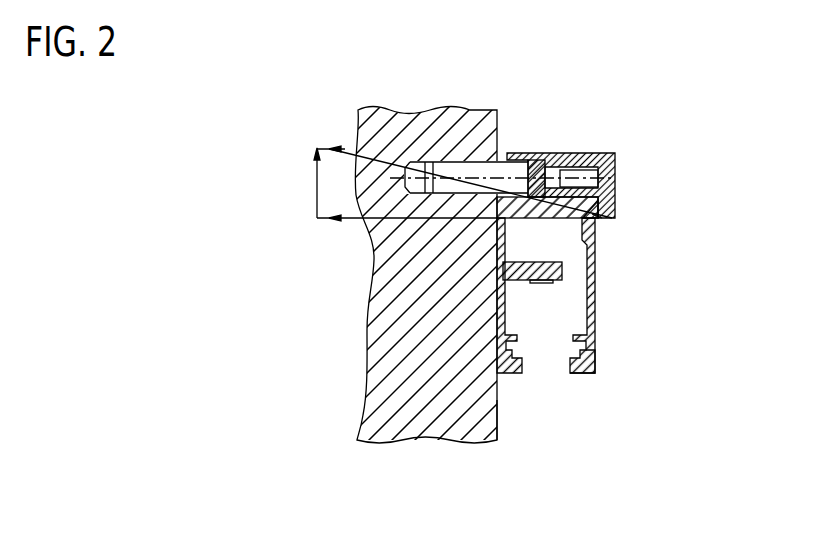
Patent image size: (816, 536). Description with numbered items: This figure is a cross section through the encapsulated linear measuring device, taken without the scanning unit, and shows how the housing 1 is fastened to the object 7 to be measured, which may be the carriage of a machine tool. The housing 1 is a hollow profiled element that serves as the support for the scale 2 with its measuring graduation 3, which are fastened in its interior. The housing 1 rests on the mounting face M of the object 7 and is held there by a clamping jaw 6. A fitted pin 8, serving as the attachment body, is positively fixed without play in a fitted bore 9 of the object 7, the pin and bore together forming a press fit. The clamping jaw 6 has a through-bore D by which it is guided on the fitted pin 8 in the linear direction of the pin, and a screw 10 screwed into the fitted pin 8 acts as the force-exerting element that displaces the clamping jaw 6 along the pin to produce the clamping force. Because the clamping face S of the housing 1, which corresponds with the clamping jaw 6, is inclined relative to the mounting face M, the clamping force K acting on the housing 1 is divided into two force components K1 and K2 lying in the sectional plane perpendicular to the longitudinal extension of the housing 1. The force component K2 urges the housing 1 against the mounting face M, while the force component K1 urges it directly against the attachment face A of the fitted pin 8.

The housing 1 is at (593, 360).
The scale 2 is at (562, 273).
The measuring graduation 3 is at (540, 283).
The clamping jaw 6 is at (530, 158).
The object to be measured 7 is at (418, 422).
The fitted pin 8 is at (482, 168).
The fitted bore 9 is at (418, 165).
The screw 10 is at (613, 165).
The through-bore D is at (603, 152).
The clamping face S is at (613, 208).
The attachment face A is at (603, 217).
The mounting face M is at (497, 418).
The clamping force K is at (347, 148).
The force component K1 is at (317, 187).
The force component K2 is at (350, 220).